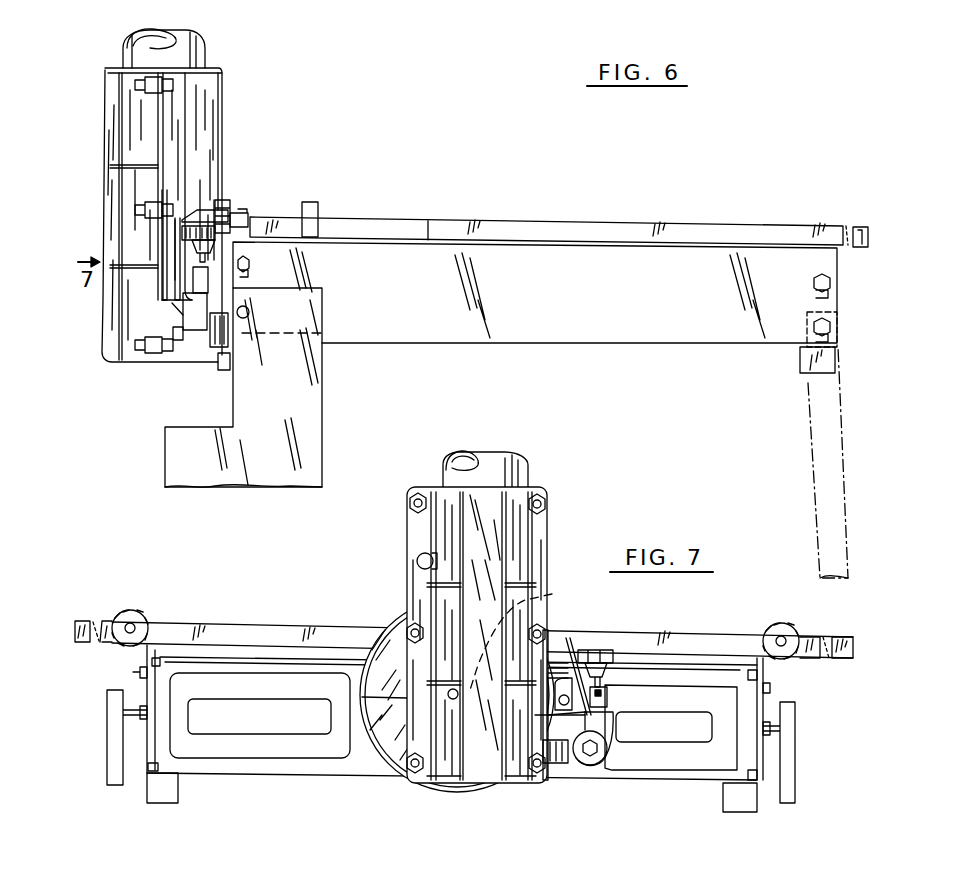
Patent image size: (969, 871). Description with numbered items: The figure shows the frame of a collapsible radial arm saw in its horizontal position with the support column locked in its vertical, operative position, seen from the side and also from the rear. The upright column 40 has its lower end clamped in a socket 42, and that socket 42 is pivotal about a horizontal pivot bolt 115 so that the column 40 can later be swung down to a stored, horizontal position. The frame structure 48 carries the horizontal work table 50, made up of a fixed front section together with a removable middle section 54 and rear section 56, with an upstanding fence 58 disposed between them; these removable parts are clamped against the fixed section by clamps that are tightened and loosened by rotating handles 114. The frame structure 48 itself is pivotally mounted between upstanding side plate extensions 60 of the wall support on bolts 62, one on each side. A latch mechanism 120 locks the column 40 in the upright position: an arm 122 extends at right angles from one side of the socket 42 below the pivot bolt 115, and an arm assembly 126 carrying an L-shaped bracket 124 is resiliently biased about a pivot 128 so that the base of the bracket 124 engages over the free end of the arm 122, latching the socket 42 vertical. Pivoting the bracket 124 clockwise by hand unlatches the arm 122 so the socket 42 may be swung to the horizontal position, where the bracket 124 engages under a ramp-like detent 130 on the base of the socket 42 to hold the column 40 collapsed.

In FIG. 6, the column 40 is at (193, 50).
In FIG. 7, the column 40 is at (530, 473).
In FIG. 6, the socket 42 is at (112, 100).
In FIG. 7, the socket 42 is at (422, 533).
In FIG. 6, the frame structure 48 is at (573, 312).
In FIG. 6, the work table 50 is at (698, 217).
In FIG. 6, the middle section 54 is at (383, 217).
In FIG. 6, the rear section 56 is at (272, 215).
In FIG. 7, the rear section 56 is at (270, 627).
In FIG. 6, the fence 58 is at (320, 207).
In FIG. 6, the side plate extensions 60 is at (313, 371).
In FIG. 6, the bolts 62 is at (249, 311).
In FIG. 7, the handles 114 is at (140, 610).
In FIG. 7, the pivot bolt 115 is at (525, 640).
In FIG. 6, the latch mechanism 120 is at (194, 322).
In FIG. 7, the latch mechanism 120 is at (610, 770).
In FIG. 7, the arm 122 is at (553, 725).
In FIG. 7, the L-shaped bracket 124 is at (570, 640).
In FIG. 7, the arm assembly 126 is at (607, 735).
In FIG. 7, the pivot 128 is at (590, 766).
In FIG. 7, the ramp-like detent 130 is at (503, 786).